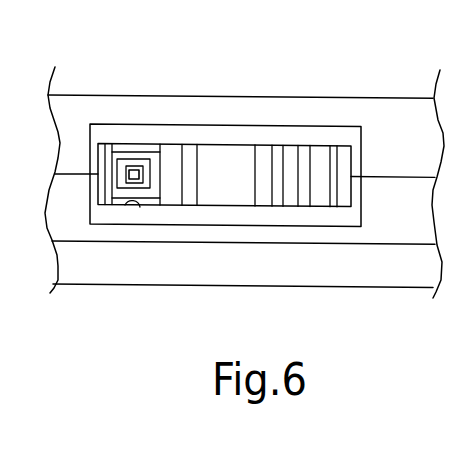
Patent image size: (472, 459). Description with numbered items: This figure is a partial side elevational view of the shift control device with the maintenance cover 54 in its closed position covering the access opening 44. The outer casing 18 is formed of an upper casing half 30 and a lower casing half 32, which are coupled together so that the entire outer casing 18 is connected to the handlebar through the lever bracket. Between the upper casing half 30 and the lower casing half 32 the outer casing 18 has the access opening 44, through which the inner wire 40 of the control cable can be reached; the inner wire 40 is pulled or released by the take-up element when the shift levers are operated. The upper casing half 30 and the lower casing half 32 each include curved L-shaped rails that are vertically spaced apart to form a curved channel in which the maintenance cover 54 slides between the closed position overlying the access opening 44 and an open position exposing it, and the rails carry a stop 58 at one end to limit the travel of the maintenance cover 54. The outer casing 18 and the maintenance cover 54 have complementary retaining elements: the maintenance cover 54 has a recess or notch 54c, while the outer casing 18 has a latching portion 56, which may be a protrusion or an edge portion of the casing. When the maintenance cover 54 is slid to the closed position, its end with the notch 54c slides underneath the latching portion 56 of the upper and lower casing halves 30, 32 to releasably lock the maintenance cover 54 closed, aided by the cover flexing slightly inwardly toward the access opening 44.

The outer casing 18 is at (409, 94).
The upper casing half 30 is at (320, 98).
The lower casing half 32 is at (381, 288).
The inner wire 40 is at (135, 173).
The access opening 44 is at (140, 207).
The maintenance cover 54 is at (251, 137).
The notch 54c is at (192, 197).
The latching portion 56 is at (92, 137).
The stop 58 is at (351, 163).